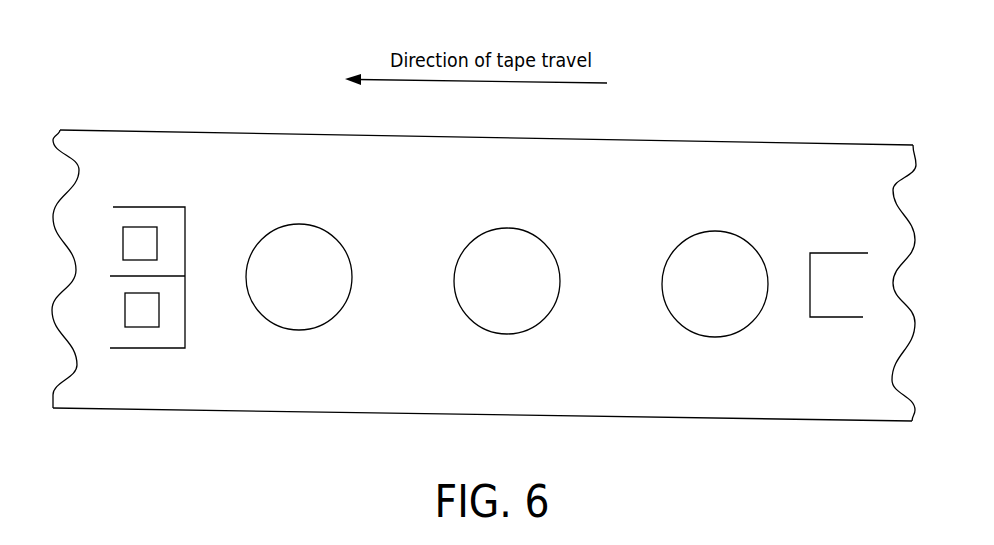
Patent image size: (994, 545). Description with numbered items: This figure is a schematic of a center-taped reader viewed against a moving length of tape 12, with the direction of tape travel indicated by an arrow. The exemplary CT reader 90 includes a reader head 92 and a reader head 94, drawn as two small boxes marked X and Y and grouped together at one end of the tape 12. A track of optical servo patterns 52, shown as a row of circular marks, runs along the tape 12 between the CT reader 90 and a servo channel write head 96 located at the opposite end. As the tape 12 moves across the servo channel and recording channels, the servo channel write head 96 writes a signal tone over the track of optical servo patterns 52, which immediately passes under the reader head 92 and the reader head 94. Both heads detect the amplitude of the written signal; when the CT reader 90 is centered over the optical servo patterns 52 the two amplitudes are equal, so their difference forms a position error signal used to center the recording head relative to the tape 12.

The tape 12 is at (848, 143).
The track of optical servo patterns 52 is at (325, 227).
The CT reader 90 is at (168, 207).
The reader head 92 is at (133, 246).
The reader head 94 is at (130, 312).
The servo channel write head 96 is at (832, 253).